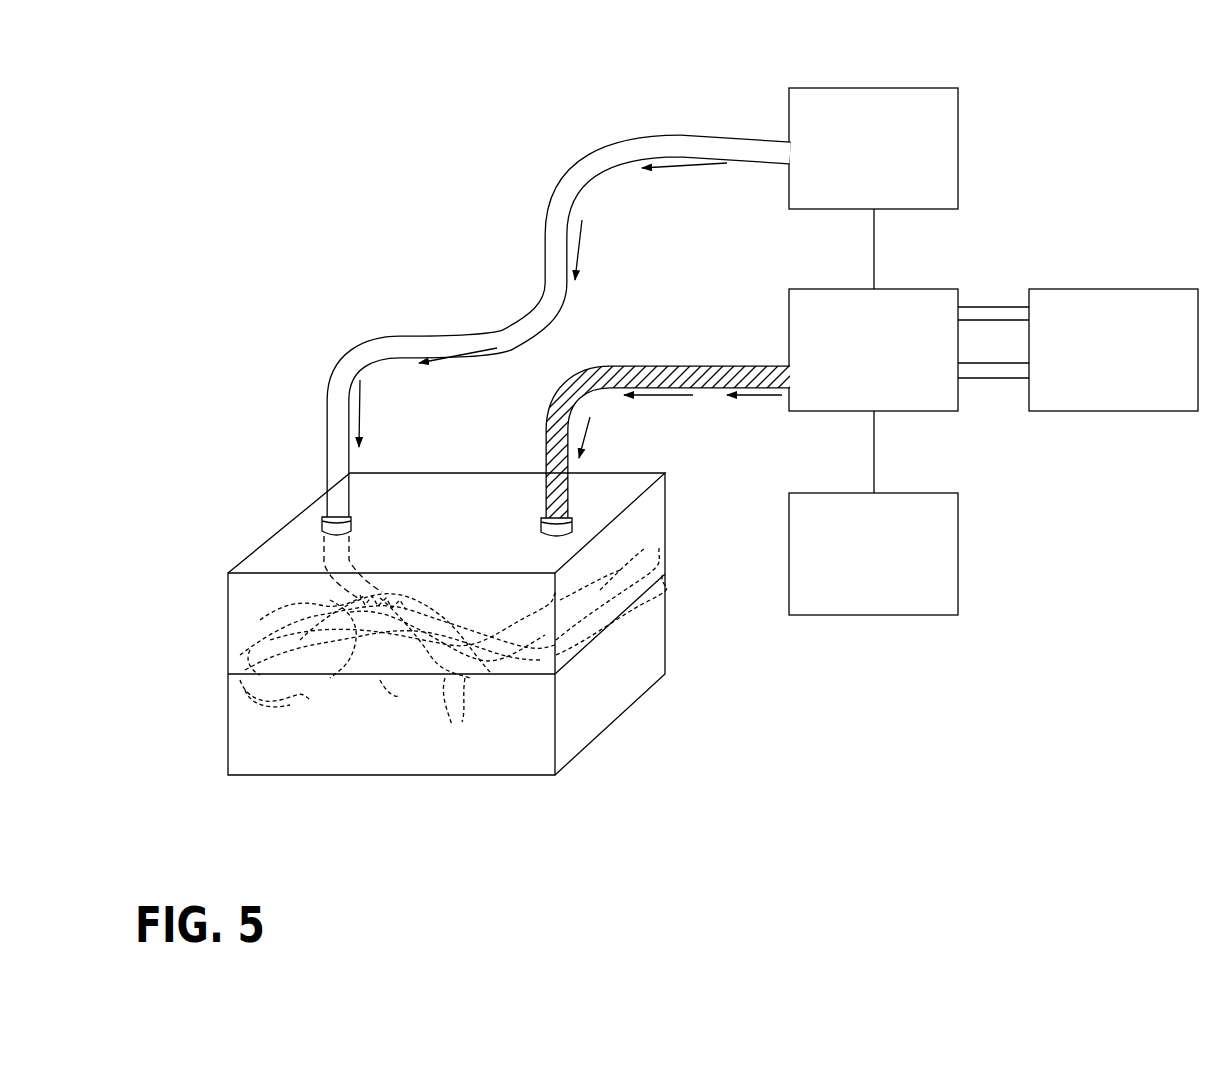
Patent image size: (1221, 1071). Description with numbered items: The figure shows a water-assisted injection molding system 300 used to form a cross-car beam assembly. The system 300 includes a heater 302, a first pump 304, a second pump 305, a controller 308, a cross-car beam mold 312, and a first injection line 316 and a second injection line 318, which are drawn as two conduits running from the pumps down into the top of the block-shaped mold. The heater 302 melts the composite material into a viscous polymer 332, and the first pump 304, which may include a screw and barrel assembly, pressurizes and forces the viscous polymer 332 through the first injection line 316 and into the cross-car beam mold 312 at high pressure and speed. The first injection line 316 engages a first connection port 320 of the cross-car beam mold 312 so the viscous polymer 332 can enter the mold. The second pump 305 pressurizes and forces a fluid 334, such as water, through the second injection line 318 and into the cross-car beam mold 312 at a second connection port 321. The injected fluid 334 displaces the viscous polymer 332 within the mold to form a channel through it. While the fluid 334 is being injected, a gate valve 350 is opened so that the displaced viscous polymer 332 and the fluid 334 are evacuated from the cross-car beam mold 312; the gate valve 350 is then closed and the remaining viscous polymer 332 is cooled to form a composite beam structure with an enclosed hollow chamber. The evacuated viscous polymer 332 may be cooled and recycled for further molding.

The water-assisted injection molding system 300 is at (588, 90).
The heater 302 is at (1098, 366).
The first pump 304 is at (858, 370).
The second pump 305 is at (858, 165).
The controller 308 is at (858, 574).
The cross-car beam mold 312 is at (366, 713).
The first injection line 316 is at (712, 388).
The second injection line 318 is at (545, 240).
The first connection port 320 is at (540, 530).
The second connection port 321 is at (375, 592).
The viscous polymer 332 is at (597, 386).
The fluid 334 is at (482, 334).
The gate valve 350 is at (452, 727).